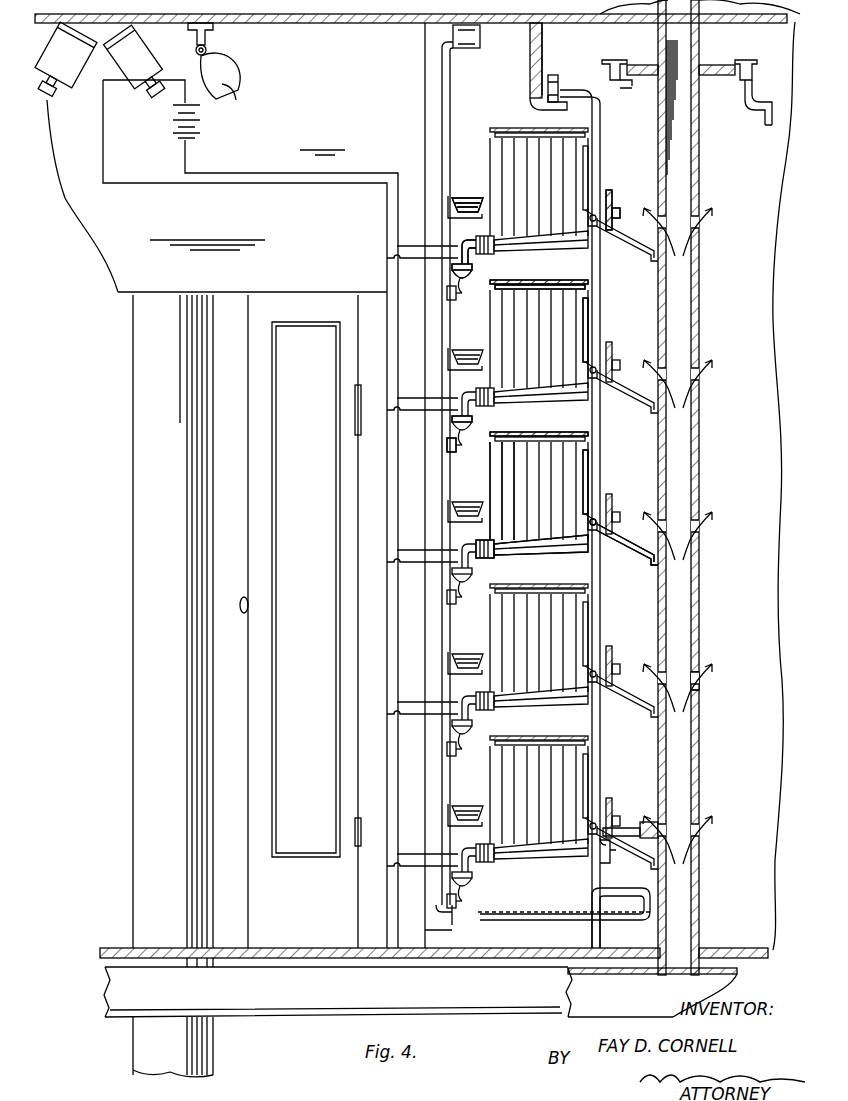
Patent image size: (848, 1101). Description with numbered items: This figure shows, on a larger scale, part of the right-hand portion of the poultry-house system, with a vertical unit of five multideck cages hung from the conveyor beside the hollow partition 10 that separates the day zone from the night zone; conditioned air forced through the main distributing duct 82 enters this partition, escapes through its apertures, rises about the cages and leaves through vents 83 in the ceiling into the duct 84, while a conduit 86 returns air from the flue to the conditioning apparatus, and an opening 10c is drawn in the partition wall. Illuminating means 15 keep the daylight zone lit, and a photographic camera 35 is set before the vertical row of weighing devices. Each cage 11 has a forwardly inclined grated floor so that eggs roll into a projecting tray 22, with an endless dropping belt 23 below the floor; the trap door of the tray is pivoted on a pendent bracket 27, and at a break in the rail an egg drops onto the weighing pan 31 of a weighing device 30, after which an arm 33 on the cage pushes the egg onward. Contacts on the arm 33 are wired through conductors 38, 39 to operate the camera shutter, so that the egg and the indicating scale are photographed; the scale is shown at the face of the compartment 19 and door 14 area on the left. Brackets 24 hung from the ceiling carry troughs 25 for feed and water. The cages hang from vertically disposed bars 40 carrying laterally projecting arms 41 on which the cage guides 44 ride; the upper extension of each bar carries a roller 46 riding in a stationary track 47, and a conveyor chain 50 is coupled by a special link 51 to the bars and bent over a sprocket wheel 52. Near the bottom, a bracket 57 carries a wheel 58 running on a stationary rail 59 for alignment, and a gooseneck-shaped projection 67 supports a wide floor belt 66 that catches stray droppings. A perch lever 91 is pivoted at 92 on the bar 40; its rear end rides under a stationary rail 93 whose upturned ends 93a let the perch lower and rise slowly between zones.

The partition 10 is at (659, 446).
The duct wall opening 10c is at (700, 688).
The rack 11 is at (494, 479).
The door 14 is at (300, 621).
The illuminating means 15 is at (210, 92).
The compartment 19 is at (247, 206).
The projecting tray 22 is at (498, 402).
The endless belt 23 is at (536, 279).
The bracket 24 is at (452, 108).
The trough 25 is at (466, 198).
The pendent bracket 27 is at (474, 252).
The weighing device 30 is at (440, 442).
The weighing pan 31 is at (464, 272).
The arm 33 is at (472, 410).
The photographic camera 35 is at (58, 82).
The conductor 38 is at (283, 184).
The conductor 39 is at (312, 173).
The vertically disposed bar 40 is at (566, 92).
The laterally projecting arm 41 is at (580, 284).
The guide 44 is at (590, 434).
The roller 46 is at (556, 80).
The stationary track 47 is at (530, 64).
The conveyor chain 50 is at (614, 60).
The special link 51 is at (620, 86).
The sprocket wheel 52 is at (648, 76).
The bracket 57 is at (612, 858).
The wheel 58 is at (612, 828).
The stationary rail 59 is at (650, 822).
The wide belt 66 is at (526, 911).
The gooseneck-shaped horizontal projection 67 is at (582, 920).
The main distributing duct 82 is at (420, 992).
The vent 83 is at (648, 18).
The duct 84 is at (722, 14).
The conduit 86 is at (140, 435).
The lever 91 is at (590, 466).
The pivot 92 is at (598, 518).
The stationary rail 93 is at (612, 210).
The upwardly curved rail end 93a is at (610, 528).